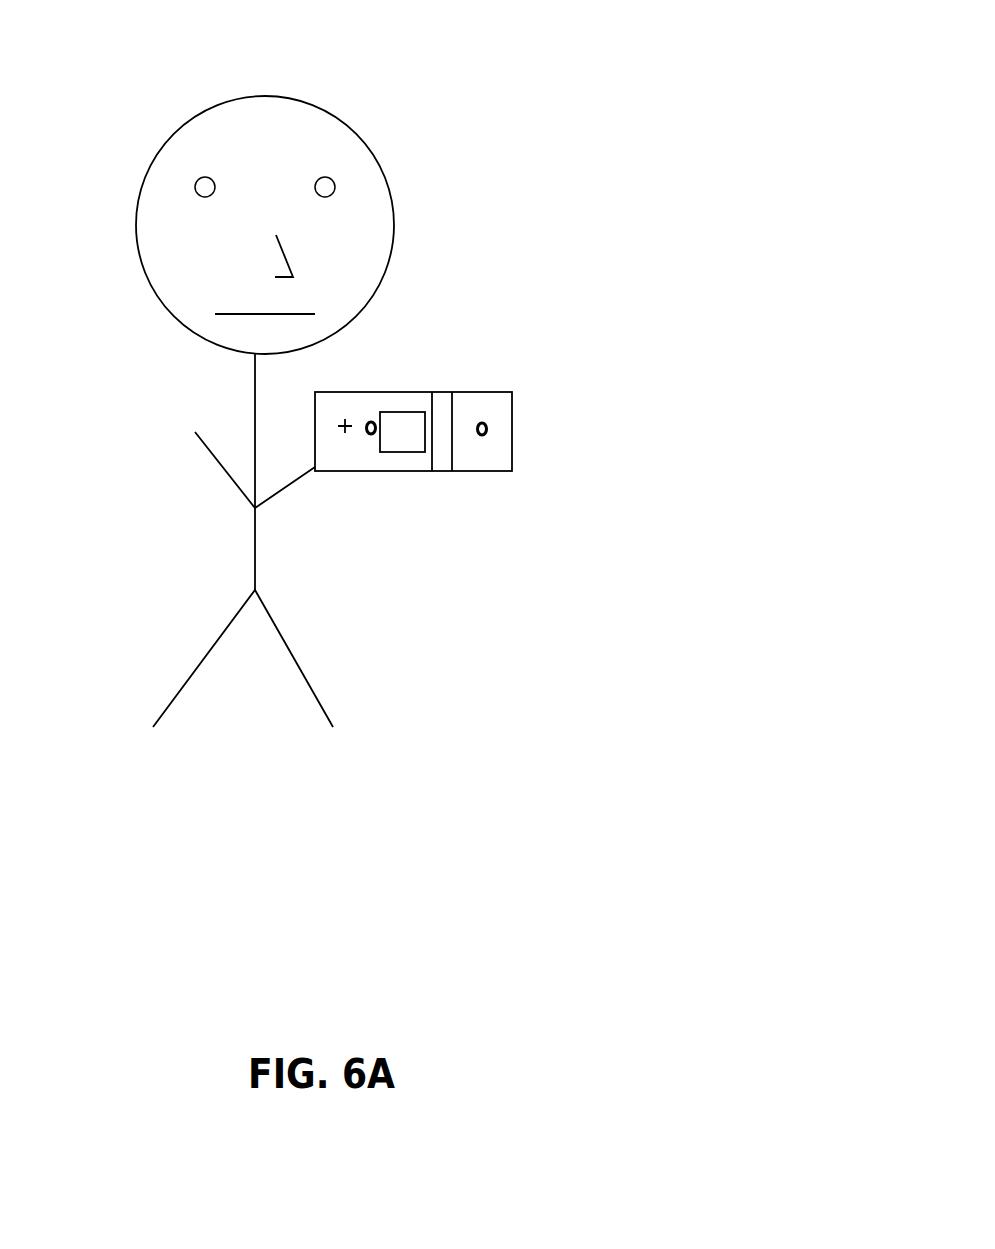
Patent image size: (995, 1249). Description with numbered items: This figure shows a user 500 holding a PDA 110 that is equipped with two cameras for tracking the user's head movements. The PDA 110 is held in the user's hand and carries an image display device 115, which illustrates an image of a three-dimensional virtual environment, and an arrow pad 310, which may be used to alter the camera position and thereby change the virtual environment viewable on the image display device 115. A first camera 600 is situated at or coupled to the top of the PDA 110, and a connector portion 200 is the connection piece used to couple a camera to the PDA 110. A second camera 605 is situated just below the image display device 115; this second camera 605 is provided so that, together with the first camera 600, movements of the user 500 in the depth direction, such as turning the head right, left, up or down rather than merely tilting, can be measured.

The user 500 is at (178, 137).
The Personal Digital Assistant (PDA) 110 is at (512, 452).
The connector portion 200 is at (440, 472).
The image display device 115 is at (413, 452).
The arrow pad 310 is at (353, 412).
The second camera 605 is at (372, 437).
The first camera 600 is at (492, 422).